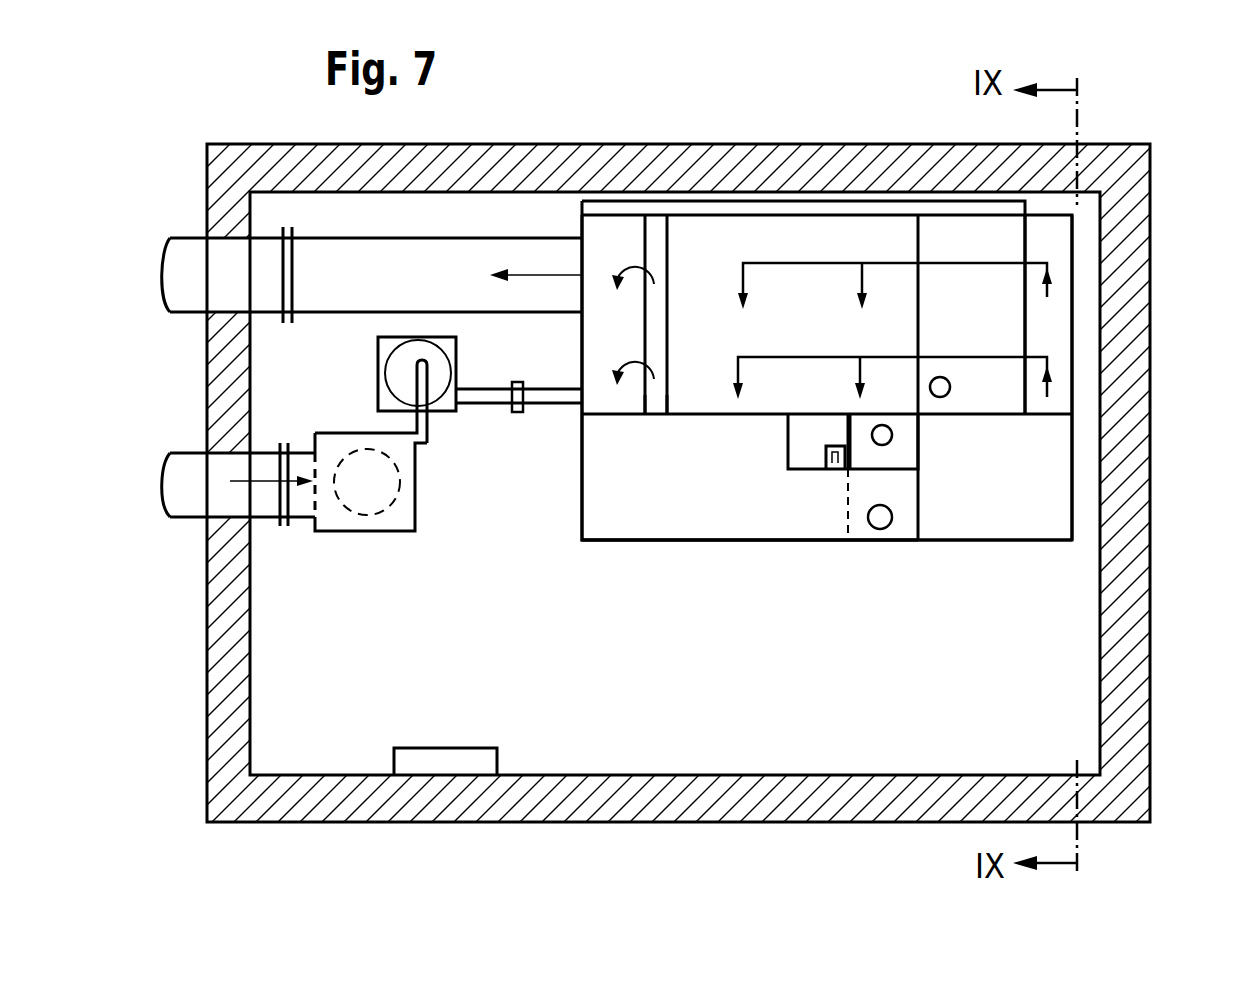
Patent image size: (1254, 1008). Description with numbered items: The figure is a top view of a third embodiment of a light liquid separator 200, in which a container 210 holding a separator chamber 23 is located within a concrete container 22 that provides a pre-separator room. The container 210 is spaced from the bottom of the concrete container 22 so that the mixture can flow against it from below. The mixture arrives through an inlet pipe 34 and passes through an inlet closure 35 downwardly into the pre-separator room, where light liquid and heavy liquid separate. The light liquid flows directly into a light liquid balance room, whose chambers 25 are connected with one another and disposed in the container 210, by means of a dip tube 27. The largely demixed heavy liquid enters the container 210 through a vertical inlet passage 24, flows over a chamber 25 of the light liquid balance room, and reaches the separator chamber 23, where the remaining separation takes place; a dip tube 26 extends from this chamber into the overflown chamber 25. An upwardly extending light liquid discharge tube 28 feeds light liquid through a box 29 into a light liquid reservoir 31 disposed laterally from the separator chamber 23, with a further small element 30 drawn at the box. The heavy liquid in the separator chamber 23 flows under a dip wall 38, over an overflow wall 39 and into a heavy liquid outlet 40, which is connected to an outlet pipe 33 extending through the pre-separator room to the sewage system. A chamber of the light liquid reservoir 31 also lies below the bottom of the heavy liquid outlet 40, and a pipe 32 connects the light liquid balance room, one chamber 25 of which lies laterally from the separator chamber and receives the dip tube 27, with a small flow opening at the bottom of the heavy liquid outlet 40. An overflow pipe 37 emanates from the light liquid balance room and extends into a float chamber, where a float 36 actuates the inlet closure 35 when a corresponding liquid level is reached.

The light liquid separator 200 is at (705, 135).
The concrete container 22 is at (1140, 440).
The separator chamber 23 is at (836, 331).
The vertical inlet passage 24 is at (1057, 322).
The light liquid balance room chamber 25 is at (1000, 395).
The dip tube 26 is at (940, 377).
The dip tube 27 is at (882, 530).
The light liquid discharge tube 28 is at (893, 437).
The box 29 is at (900, 470).
The element 30 is at (826, 467).
The light liquid reservoir 31 is at (815, 481).
The pipe 32 is at (852, 207).
The outlet pipe 33 is at (482, 222).
The inlet pipe 34 is at (268, 512).
The inlet closure 35 is at (405, 497).
The float 36 is at (393, 377).
The overflow pipe 37 is at (540, 390).
The dip wall 38 is at (670, 305).
The overflow wall 39 is at (645, 414).
The heavy liquid outlet 40 is at (635, 341).
The container 210 is at (945, 545).